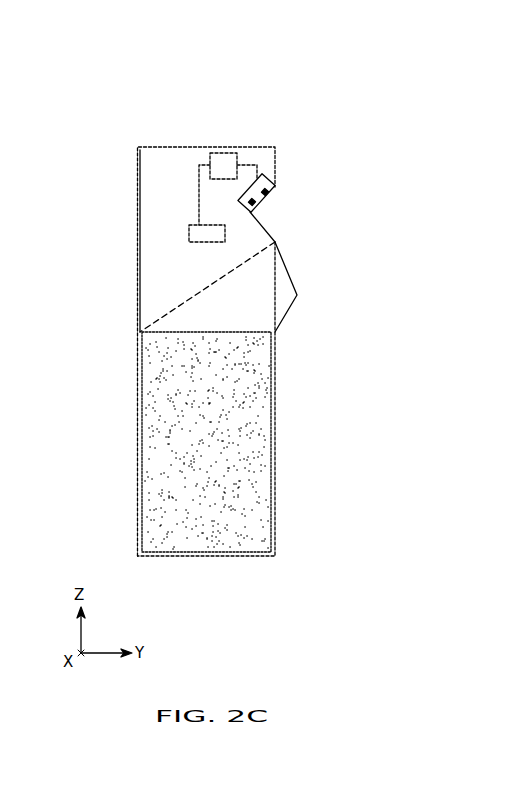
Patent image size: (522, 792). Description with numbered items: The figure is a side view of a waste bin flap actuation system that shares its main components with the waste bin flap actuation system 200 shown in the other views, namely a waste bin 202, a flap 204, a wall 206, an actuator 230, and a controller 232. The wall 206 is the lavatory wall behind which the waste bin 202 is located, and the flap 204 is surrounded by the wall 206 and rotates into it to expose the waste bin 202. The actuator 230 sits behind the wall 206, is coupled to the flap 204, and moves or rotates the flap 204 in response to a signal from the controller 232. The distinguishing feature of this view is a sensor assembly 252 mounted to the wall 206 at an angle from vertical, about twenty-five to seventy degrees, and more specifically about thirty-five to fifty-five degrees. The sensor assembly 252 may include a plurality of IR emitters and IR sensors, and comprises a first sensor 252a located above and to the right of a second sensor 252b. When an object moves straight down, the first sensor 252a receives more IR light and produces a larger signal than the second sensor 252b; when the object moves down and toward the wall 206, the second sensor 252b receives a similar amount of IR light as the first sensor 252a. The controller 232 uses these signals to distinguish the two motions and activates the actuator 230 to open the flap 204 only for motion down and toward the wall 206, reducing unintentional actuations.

The waste bin flap actuation system 200 is at (112, 116).
The waste bin 202 is at (262, 393).
The flap 204 is at (292, 283).
The wall 206 is at (275, 458).
The actuator 230 is at (188, 233).
The controller 232 is at (225, 160).
The sensor assembly 252 is at (289, 183).
The first sensor 252a is at (273, 188).
The second sensor 252b is at (258, 186).